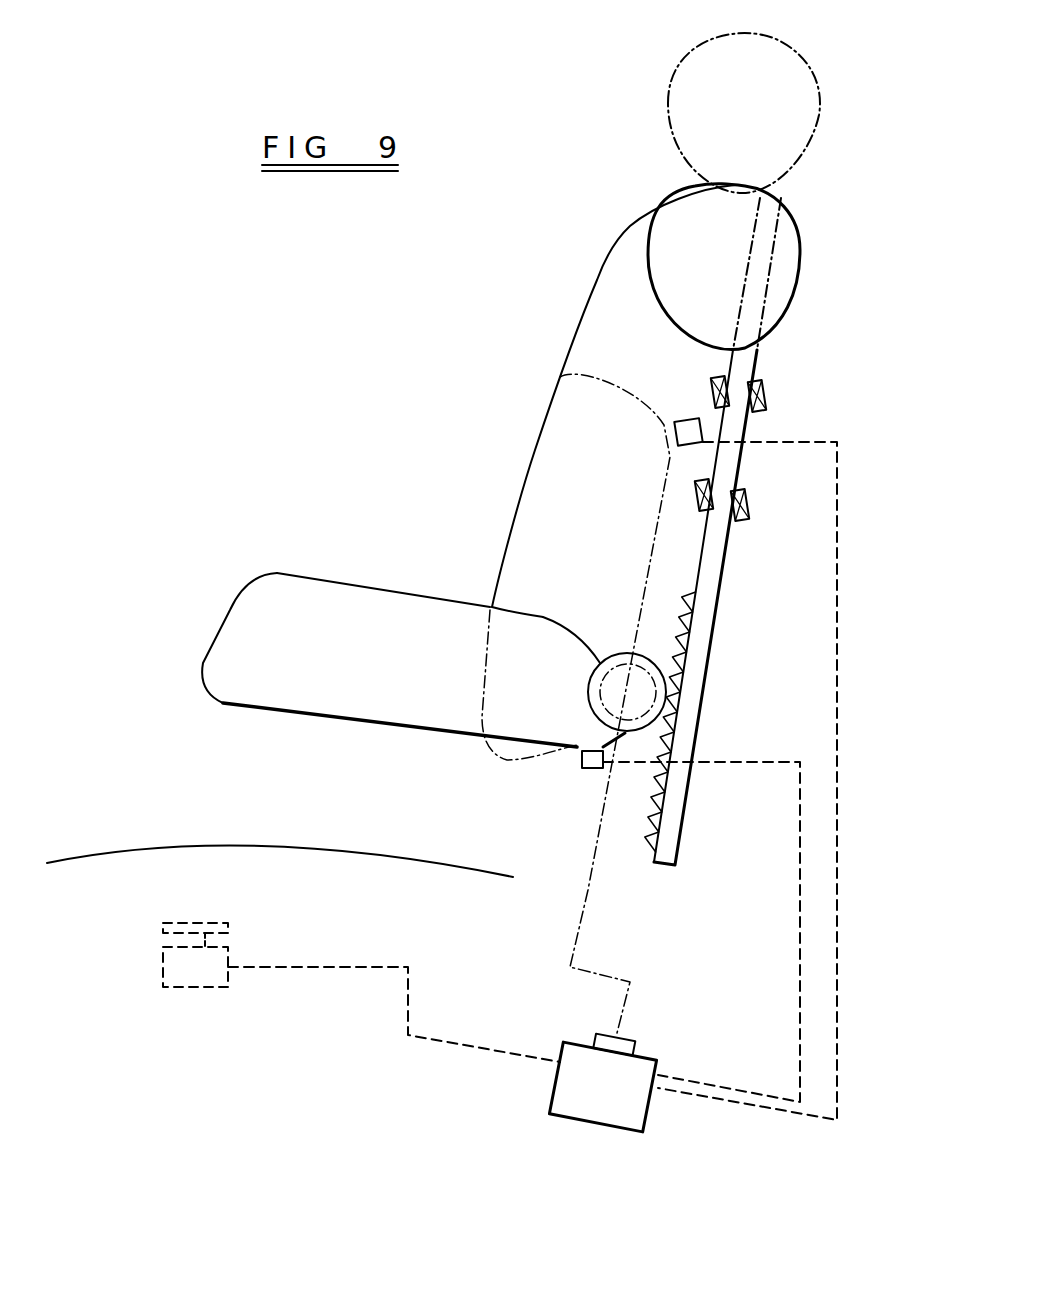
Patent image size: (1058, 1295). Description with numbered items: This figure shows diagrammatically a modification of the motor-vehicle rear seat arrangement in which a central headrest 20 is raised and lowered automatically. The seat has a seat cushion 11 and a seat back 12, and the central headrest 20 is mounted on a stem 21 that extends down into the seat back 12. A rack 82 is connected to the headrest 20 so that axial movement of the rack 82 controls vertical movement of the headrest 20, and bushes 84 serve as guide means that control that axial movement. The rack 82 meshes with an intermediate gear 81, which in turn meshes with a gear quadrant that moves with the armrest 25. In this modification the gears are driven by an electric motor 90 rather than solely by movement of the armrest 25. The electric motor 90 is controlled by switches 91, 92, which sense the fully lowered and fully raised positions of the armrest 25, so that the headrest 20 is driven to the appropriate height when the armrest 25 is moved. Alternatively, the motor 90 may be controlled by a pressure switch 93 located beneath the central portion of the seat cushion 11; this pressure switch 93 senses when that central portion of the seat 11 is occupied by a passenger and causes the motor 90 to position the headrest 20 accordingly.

The seat cushion 11 is at (178, 863).
The seat back 12 is at (597, 283).
The central headrest 20 is at (680, 108).
The stem 21 is at (770, 296).
The armrest 25 is at (550, 463).
The intermediate gear 81 is at (657, 677).
The rack 82 is at (695, 648).
The bushes 84 is at (713, 383).
The electric motor 90 is at (640, 1103).
The switch 91 is at (580, 760).
The switch 92 is at (702, 430).
The pressure switch 93 is at (222, 990).